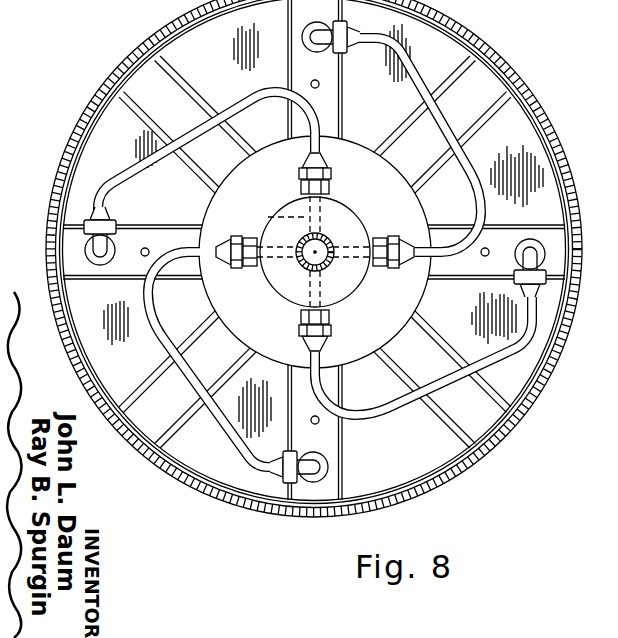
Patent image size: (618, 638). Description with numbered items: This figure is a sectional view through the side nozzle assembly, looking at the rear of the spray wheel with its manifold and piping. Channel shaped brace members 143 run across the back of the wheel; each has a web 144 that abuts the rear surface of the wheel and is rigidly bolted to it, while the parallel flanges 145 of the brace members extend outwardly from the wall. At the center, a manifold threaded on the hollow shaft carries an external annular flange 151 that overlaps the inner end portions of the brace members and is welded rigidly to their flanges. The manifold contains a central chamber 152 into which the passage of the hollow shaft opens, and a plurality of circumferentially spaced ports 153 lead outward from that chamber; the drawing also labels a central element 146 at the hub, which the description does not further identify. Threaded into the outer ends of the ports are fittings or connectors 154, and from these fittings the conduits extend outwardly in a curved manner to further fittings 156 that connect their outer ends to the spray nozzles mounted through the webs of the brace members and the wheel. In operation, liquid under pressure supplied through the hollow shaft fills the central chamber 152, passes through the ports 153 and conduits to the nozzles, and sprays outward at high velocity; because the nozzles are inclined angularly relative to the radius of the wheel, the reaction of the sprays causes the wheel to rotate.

The channel shaped brace member 143 is at (343, 109).
The web 144 is at (478, 116).
The parallel flange 145 is at (452, 60).
The central passage opening 146 is at (325, 269).
The external annular flange 151 is at (410, 303).
The central chamber 152 is at (327, 237).
The port 153 is at (268, 217).
The fitting 154 is at (328, 189).
The fitting 156 is at (108, 228).